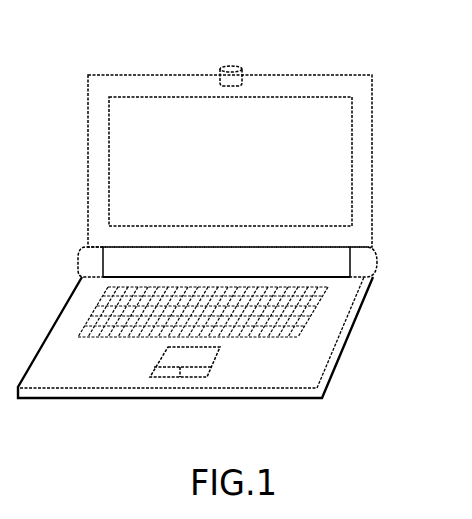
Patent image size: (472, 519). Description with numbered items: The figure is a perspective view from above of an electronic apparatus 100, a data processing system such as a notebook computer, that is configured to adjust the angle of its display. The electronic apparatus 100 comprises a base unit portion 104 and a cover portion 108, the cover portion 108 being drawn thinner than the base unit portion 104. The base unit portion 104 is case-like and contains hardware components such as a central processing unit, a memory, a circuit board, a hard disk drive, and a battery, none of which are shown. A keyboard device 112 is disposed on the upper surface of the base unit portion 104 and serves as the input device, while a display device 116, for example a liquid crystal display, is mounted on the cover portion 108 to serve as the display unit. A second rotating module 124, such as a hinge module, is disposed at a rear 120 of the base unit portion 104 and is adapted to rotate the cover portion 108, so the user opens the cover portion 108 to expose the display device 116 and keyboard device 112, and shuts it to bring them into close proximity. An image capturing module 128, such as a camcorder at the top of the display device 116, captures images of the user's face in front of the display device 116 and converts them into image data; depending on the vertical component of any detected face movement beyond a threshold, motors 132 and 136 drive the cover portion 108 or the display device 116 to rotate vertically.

The electronic apparatus 100 is at (377, 171).
The base unit portion 104 is at (347, 347).
The cover portion 108 is at (372, 113).
The keyboard device 112 is at (328, 290).
The display device 116 is at (338, 96).
The rear of the base unit portion 120 is at (372, 279).
The second rotating module 124 is at (343, 246).
The image capturing module 128 is at (234, 67).
The motor 132 is at (378, 274).
The motor 136 is at (80, 256).